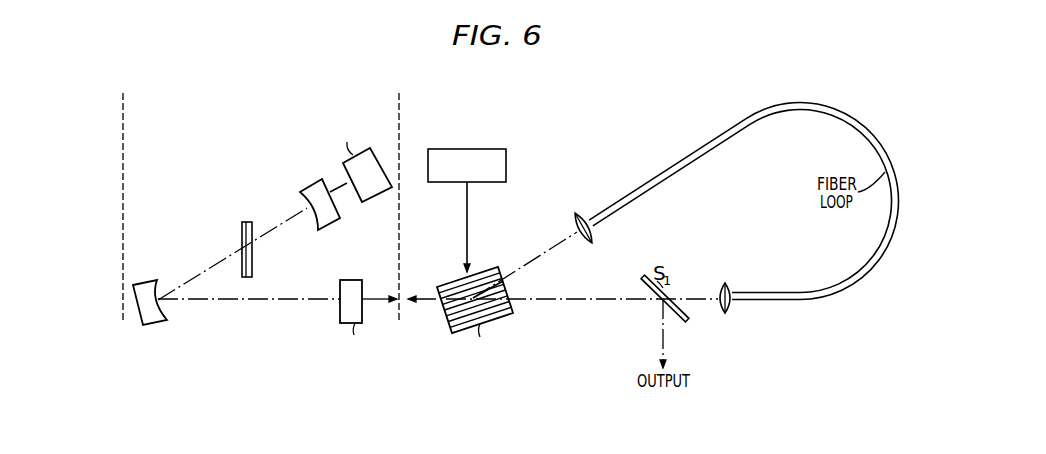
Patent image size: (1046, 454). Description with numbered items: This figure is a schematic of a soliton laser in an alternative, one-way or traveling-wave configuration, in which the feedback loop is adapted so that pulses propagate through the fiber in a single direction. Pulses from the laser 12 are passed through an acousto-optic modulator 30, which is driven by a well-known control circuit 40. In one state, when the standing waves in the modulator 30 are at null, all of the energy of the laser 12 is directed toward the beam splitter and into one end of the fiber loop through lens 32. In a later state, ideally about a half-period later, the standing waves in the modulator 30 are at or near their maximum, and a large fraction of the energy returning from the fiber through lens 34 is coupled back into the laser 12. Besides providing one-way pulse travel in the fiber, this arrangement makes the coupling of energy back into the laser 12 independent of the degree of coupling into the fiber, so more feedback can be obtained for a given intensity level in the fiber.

The laser 12 is at (261, 223).
The control circuit 40 is at (496, 149).
The acousto-optic modulator 30 is at (563, 303).
The lens 34 is at (592, 237).
The lens 32 is at (728, 312).